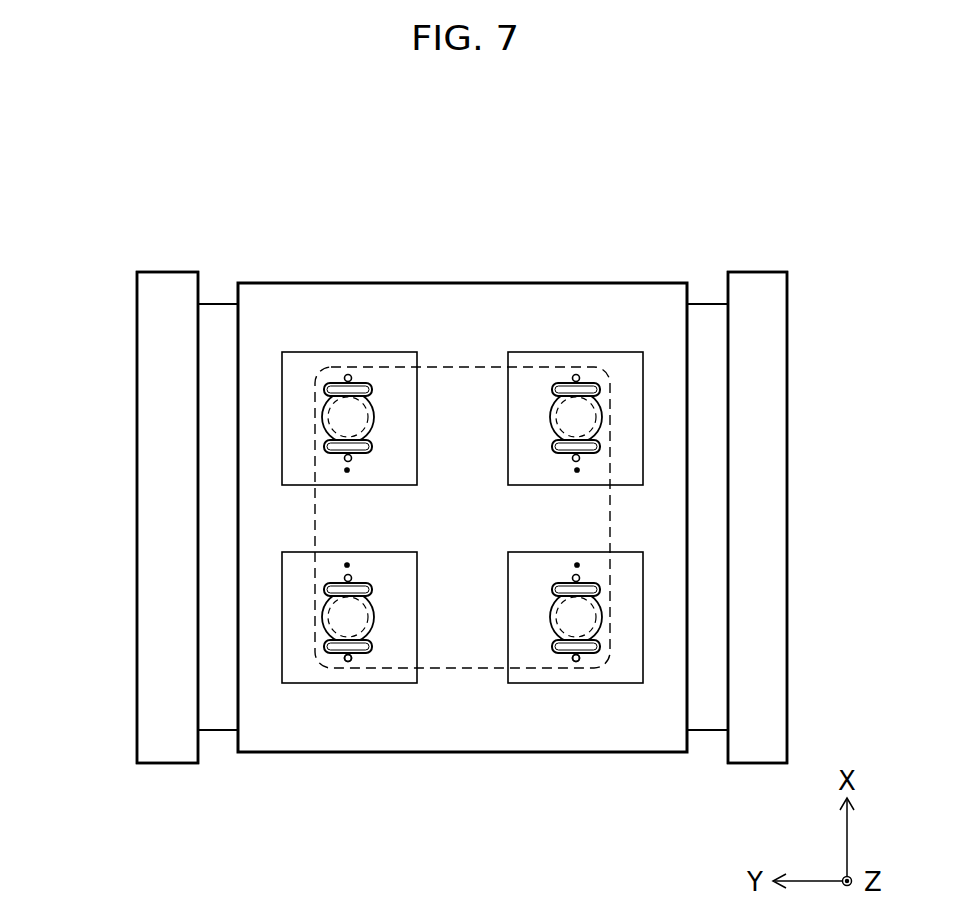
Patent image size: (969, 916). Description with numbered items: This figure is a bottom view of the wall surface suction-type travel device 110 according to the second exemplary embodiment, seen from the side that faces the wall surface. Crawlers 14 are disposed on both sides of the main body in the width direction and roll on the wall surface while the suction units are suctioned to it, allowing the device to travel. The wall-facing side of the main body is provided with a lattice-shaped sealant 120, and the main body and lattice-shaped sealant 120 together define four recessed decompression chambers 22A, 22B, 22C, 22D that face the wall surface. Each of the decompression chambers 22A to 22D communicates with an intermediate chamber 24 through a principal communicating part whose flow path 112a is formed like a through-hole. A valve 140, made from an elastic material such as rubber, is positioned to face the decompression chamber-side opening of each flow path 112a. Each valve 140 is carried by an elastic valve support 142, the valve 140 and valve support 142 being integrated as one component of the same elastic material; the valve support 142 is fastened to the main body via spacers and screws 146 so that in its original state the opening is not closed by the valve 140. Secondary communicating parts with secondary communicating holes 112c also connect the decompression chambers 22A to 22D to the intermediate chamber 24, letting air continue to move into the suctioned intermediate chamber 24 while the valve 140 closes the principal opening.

The wall surface suction-type travel device 110 is at (108, 228).
The crawlers 14 is at (166, 272).
The lattice-shaped sealant 120 is at (443, 530).
The decompression chamber 22A is at (292, 360).
The decompression chamber 22B is at (300, 673).
The decompression chamber 22C is at (620, 360).
The decompression chamber 22D is at (628, 673).
The intermediate chamber 24 is at (497, 375).
The valve 140 is at (323, 428).
The valve support 142 is at (370, 383).
The flow path 112a is at (375, 417).
The secondary communicating hole 112c is at (347, 472).
The screws 146 is at (347, 662).